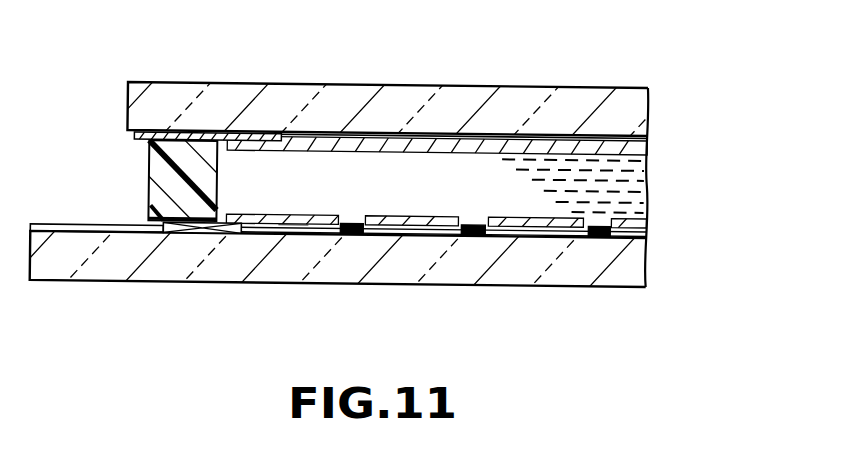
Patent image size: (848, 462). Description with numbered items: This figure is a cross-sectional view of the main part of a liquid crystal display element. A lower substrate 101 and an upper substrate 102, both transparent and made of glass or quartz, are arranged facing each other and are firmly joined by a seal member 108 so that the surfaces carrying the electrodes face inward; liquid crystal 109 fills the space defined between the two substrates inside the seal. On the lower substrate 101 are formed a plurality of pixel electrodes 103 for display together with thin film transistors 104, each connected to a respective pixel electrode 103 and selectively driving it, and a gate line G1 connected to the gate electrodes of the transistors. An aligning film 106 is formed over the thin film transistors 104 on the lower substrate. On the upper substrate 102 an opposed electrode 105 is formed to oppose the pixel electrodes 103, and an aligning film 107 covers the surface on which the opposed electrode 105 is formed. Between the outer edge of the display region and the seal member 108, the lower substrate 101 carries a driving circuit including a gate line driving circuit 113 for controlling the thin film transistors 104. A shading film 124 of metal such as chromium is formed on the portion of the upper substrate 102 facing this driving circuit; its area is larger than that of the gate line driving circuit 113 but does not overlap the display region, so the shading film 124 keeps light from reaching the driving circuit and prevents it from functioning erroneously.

The lower substrate 101 is at (640, 273).
The upper substrate 102 is at (640, 108).
The pixel electrode 103 is at (415, 234).
The thin film transistor 104 is at (355, 234).
The opposed electrode 105 is at (467, 137).
The aligning film 106 is at (648, 232).
The aligning film 107 is at (645, 148).
The seal member 108 is at (157, 173).
The liquid crystal 109 is at (640, 190).
The gate line driving circuit 113 is at (178, 233).
The shading film 124 is at (193, 134).
The gate line G1 is at (293, 234).